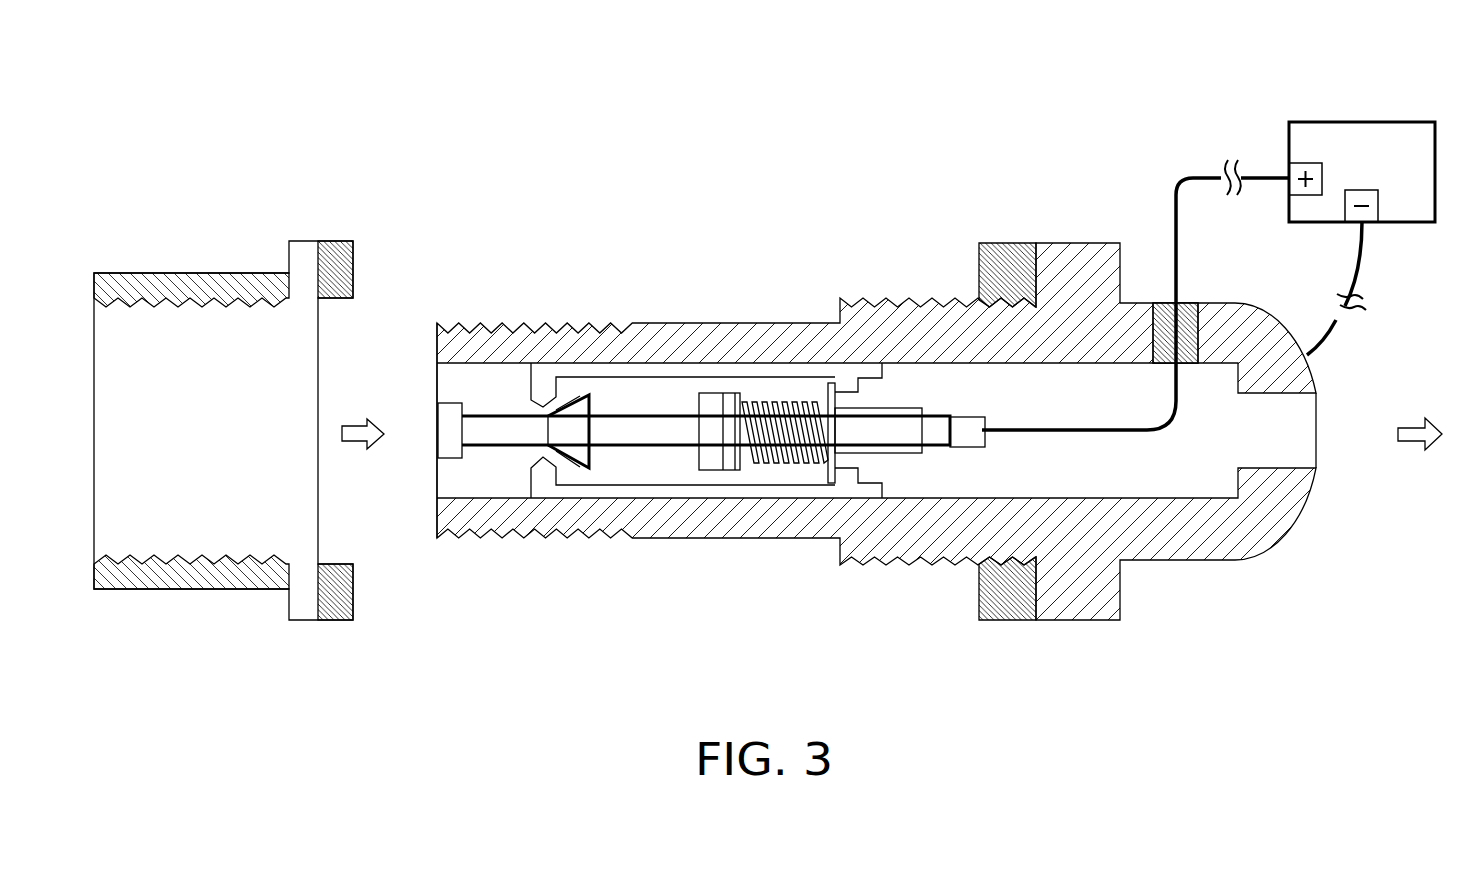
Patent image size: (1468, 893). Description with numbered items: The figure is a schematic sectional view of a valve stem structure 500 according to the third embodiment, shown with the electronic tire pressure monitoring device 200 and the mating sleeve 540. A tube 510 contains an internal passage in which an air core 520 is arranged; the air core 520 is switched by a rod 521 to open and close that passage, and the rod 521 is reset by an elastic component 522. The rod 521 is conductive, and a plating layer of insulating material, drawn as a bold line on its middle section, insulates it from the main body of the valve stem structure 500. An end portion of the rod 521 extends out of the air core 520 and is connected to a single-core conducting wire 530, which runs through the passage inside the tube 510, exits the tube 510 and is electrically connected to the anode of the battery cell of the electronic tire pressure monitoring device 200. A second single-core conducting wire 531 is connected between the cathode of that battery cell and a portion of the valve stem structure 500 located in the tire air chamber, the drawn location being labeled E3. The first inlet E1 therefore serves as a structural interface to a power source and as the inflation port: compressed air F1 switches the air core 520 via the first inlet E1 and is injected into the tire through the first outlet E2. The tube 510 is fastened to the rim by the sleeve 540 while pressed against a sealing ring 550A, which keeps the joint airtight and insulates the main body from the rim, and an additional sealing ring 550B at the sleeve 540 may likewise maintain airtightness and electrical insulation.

The valve stem structure 500 is at (481, 184).
The tube 510 is at (895, 298).
The air core 520 is at (711, 340).
The rod 521 is at (661, 415).
The elastic component 522 is at (780, 403).
The single-core conducting wire 530 is at (1090, 430).
The single-core conducting wire 531 is at (1362, 255).
The sleeve 540 is at (197, 273).
The sealing ring 550A is at (1013, 260).
The sealing ring 550B is at (340, 260).
The electronic tire pressure monitoring device 200 is at (1362, 172).
The first inlet E1 is at (434, 381).
The first outlet E2 is at (1325, 440).
The insulating portion E3 is at (1179, 298).
The compressed air F1 is at (351, 450).